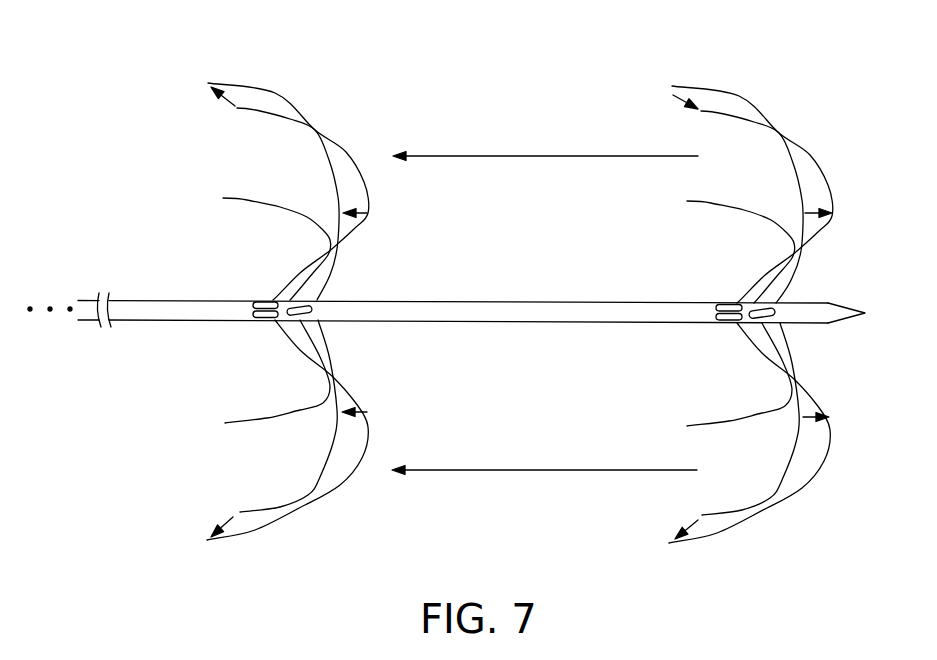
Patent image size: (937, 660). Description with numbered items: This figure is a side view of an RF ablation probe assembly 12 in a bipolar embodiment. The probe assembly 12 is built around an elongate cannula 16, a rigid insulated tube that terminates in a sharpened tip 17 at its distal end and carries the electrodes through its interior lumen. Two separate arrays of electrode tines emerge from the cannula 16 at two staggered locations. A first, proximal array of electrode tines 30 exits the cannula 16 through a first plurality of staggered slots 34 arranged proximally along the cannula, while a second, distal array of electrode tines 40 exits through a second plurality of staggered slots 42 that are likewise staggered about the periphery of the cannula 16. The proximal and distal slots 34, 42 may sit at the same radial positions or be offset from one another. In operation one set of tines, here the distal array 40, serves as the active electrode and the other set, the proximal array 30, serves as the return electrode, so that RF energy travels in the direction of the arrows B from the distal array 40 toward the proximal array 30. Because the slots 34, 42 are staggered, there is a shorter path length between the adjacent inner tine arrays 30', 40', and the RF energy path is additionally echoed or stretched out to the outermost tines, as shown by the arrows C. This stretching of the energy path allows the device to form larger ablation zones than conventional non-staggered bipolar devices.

The probe assembly 12 is at (156, 386).
The elongate cannula 16 is at (608, 315).
The sharpened tip 17 is at (866, 312).
The proximal array of electrode tines 30 is at (322, 301).
The inner tine array 30' is at (322, 336).
The first plurality of staggered slots 34 is at (262, 302).
The distal array of electrode tines 40 is at (788, 316).
The inner tine array 40' is at (751, 316).
The second plurality of staggered slots 42 is at (730, 304).
The arrows indicating direction of RF energy travel B is at (540, 155).
The arrows indicating stretching of RF energy path C is at (232, 107).